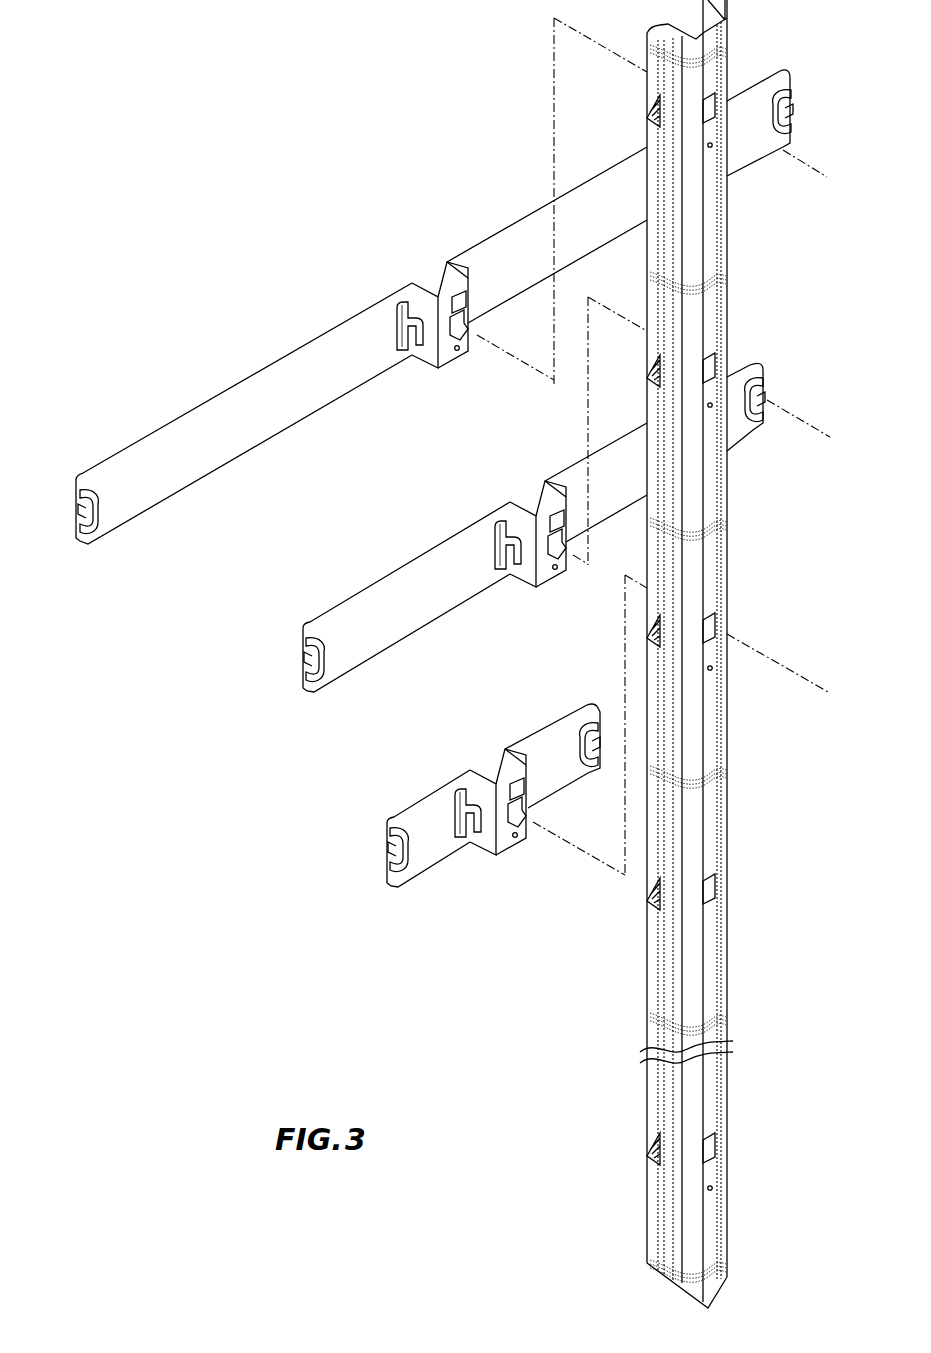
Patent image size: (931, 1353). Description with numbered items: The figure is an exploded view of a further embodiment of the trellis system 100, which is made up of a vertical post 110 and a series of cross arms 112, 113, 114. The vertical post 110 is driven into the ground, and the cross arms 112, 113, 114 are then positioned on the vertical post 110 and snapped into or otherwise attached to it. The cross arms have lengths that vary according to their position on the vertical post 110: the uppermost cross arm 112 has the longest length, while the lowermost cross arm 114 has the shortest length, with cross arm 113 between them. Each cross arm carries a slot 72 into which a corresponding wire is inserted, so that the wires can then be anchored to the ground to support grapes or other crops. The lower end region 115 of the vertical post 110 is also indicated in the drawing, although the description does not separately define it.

The trellis system 100 is at (224, 308).
The vertical post 110 is at (712, 723).
The cross arm 112 is at (120, 522).
The cross arm 113 is at (338, 670).
The cross arm 114 is at (425, 867).
The slot 72 is at (68, 515).
The lower end of post 115 is at (712, 1298).